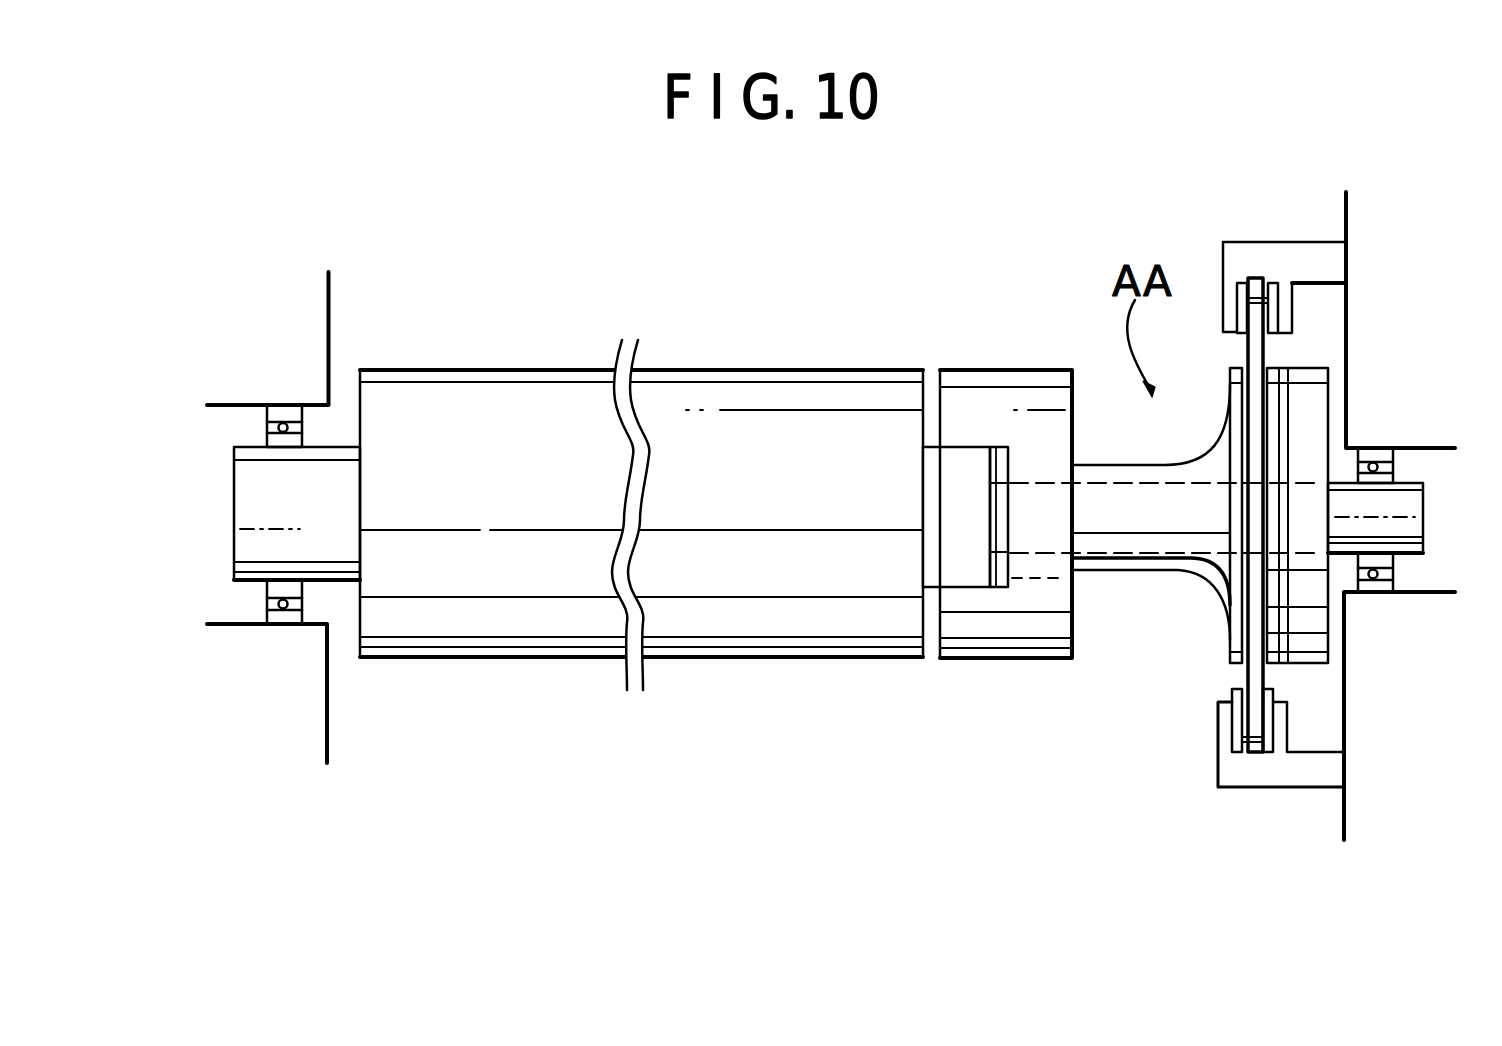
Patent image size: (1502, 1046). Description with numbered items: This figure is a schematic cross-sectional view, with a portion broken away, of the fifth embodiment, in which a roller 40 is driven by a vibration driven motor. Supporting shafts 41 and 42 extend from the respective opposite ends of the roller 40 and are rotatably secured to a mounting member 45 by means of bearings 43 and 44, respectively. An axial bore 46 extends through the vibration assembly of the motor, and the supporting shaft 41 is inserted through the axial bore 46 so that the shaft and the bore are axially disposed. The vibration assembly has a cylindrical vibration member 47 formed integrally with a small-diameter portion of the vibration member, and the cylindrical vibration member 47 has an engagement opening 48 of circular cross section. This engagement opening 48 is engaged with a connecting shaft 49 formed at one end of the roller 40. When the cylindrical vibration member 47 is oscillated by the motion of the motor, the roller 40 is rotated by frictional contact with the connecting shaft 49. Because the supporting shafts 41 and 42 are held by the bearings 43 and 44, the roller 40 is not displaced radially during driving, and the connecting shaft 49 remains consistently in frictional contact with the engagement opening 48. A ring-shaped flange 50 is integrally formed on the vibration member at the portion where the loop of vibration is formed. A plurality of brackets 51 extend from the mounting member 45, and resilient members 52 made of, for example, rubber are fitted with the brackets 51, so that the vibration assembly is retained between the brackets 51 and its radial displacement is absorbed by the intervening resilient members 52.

The roller 40 is at (810, 627).
The supporting shaft 41 is at (1418, 532).
The supporting shaft 42 is at (238, 504).
The bearing 43 is at (1373, 455).
The bearing 44 is at (281, 622).
The mounting member 45 is at (256, 352).
The axial bore 46 is at (1132, 486).
The cylindrical vibration member 47 is at (1028, 642).
The engagement opening 48 is at (997, 455).
The connecting shaft 49 is at (932, 462).
The ring-shaped flange 50 is at (1245, 672).
The bracket 51 is at (1247, 250).
The resilient member 52 is at (1237, 339).